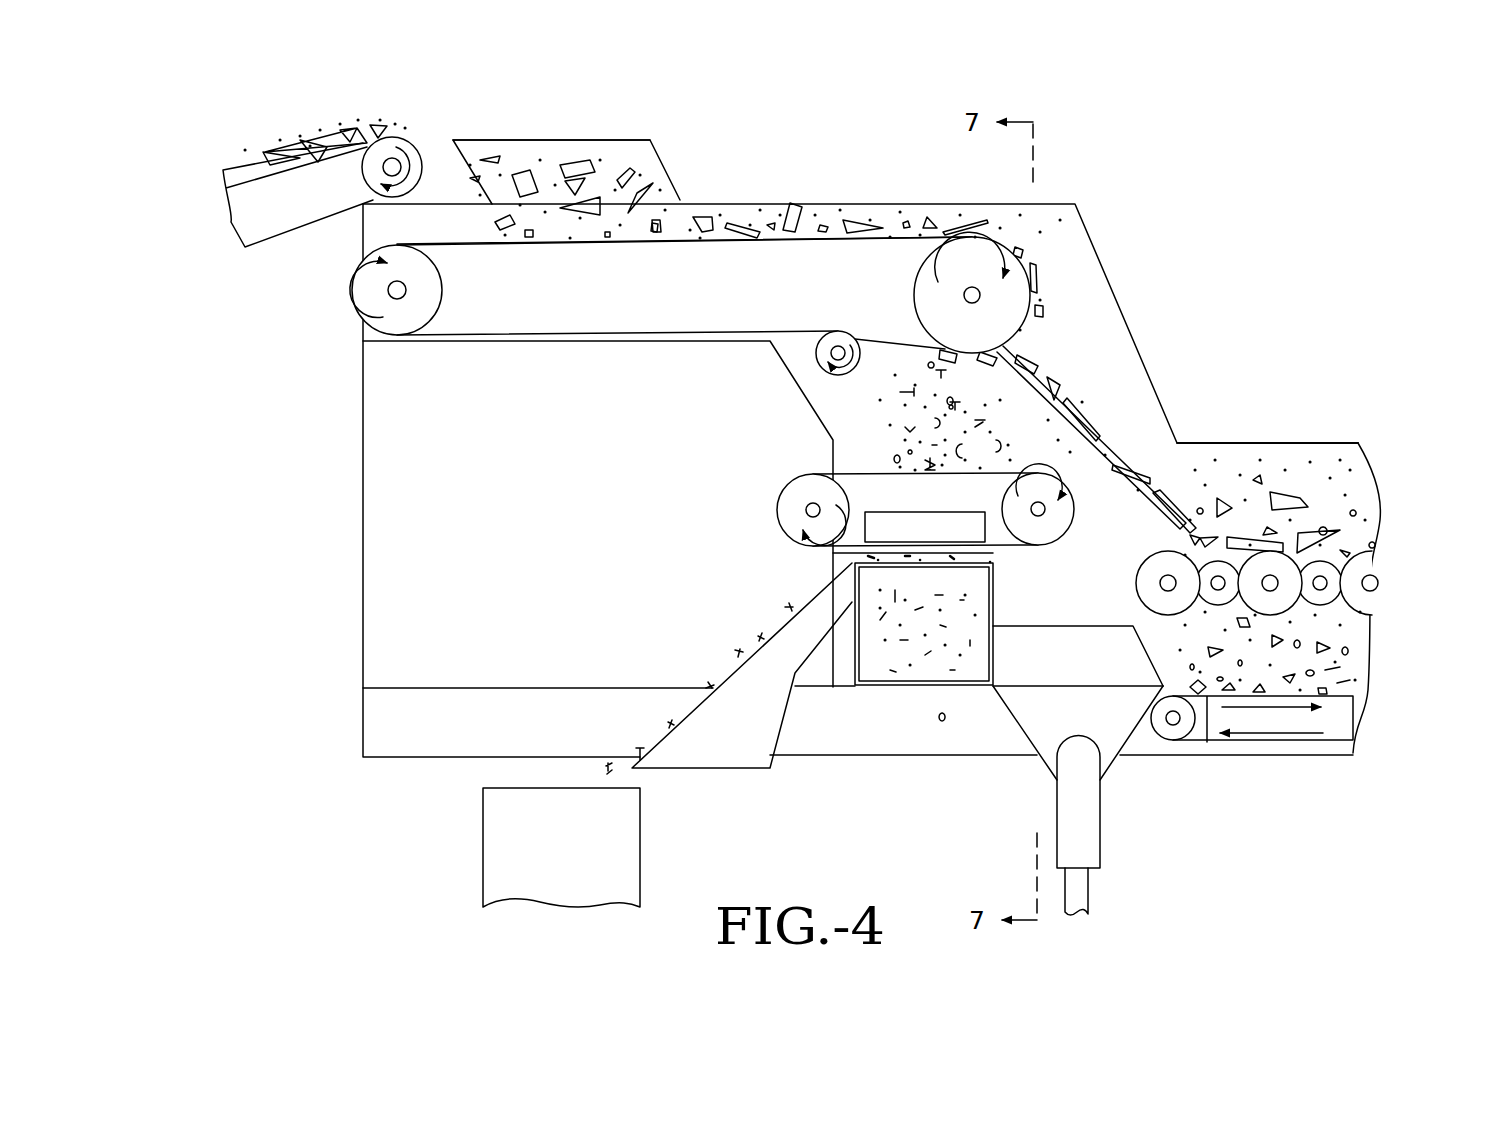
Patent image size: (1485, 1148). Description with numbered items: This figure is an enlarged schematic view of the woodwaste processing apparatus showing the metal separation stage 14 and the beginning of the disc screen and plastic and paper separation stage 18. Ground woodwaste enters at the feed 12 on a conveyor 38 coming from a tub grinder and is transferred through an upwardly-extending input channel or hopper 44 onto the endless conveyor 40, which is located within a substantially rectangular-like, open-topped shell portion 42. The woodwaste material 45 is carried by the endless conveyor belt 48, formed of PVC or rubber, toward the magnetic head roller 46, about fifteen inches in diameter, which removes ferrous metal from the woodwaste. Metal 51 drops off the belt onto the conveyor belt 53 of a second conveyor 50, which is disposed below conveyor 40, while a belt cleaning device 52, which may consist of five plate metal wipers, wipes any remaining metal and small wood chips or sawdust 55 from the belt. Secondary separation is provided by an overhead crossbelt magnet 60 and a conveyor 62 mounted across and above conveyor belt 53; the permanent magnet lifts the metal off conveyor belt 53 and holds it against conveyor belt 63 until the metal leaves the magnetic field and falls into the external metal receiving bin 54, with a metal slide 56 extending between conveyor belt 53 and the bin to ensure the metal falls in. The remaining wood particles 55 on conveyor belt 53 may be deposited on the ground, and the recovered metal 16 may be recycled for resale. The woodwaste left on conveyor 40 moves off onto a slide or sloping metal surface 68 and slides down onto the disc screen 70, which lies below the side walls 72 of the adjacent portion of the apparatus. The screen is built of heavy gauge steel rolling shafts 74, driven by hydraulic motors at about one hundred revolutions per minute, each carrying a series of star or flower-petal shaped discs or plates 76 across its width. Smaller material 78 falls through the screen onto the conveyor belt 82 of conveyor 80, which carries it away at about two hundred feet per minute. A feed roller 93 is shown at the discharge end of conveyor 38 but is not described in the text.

The feed 12 is at (271, 133).
The metal separation stage 14 is at (765, 171).
The metal removed from the wood waste 16 is at (781, 547).
The disc screen and plastic and paper separation stage 18 is at (1385, 350).
The conveyor 38 is at (285, 223).
The conveyor 40 is at (477, 340).
The shell portion 42 is at (1050, 230).
The input channel or hopper 44 is at (637, 139).
The woodwaste material 45 is at (565, 153).
The magnetic head roller 46 is at (1030, 291).
The endless conveyor belt 48 is at (617, 334).
The second conveyor 50 is at (975, 598).
The metal 51 is at (980, 417).
The belt cleaning device 52 is at (868, 340).
The conveyor belt 53 is at (863, 553).
The metal receiving bin 54 is at (612, 857).
The wood particles 55 is at (940, 352).
The metal slide 56 is at (718, 753).
The overhead crossbelt magnet 60 is at (913, 522).
The conveyor 62 is at (823, 473).
The conveyor belt 63 is at (1067, 533).
The slide or sloping metal surface 68 is at (1117, 452).
The disc screen 70 is at (1285, 474).
The side walls 72 is at (1245, 442).
The rolling shafts 74 is at (1325, 580).
The discs or plates 76 is at (1367, 563).
The smaller material 78 is at (1362, 632).
The conveyor 80 is at (1325, 743).
The conveyor belt 82 is at (1207, 742).
The feed roller 93 is at (362, 232).